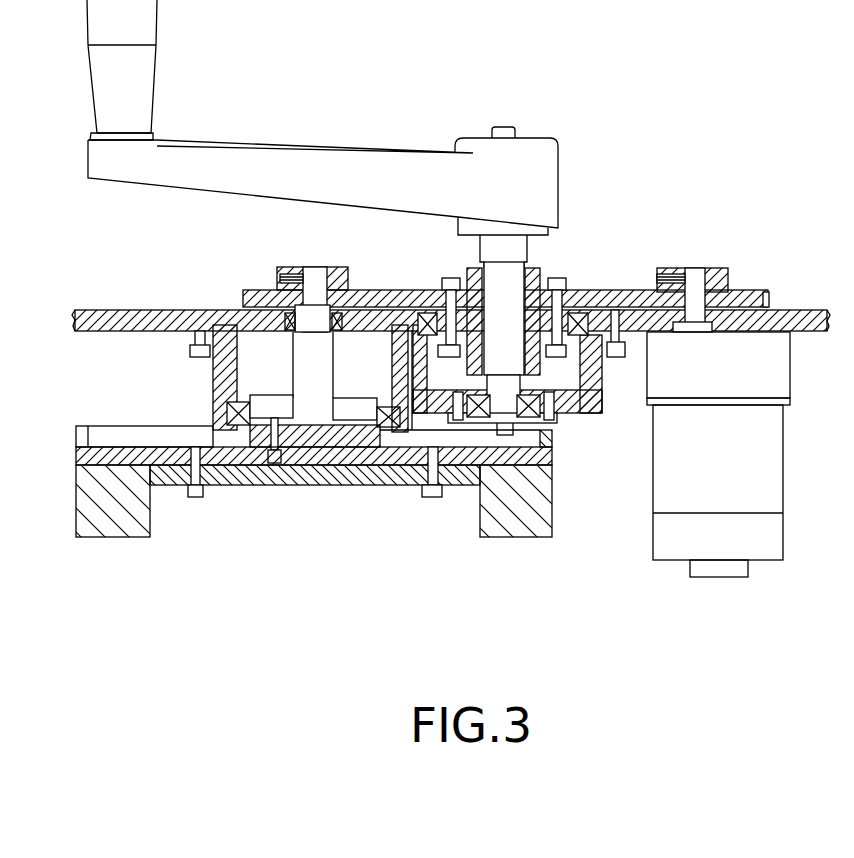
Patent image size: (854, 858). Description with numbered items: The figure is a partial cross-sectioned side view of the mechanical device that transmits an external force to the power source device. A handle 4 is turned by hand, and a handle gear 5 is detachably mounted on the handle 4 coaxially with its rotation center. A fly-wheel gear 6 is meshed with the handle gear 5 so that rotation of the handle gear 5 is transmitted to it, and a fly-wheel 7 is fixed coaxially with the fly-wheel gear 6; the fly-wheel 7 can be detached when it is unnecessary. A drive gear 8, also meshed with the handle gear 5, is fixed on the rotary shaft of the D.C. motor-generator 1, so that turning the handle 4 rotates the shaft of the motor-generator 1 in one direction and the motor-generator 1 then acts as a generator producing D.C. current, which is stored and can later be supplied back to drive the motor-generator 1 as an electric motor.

The D.C. motor-generator 1 is at (652, 488).
The handle 4 is at (239, 143).
The handle gear 5 is at (596, 300).
The fly-wheel gear 6 is at (243, 293).
The fly-wheel 7 is at (76, 483).
The drive gear 8 is at (648, 292).